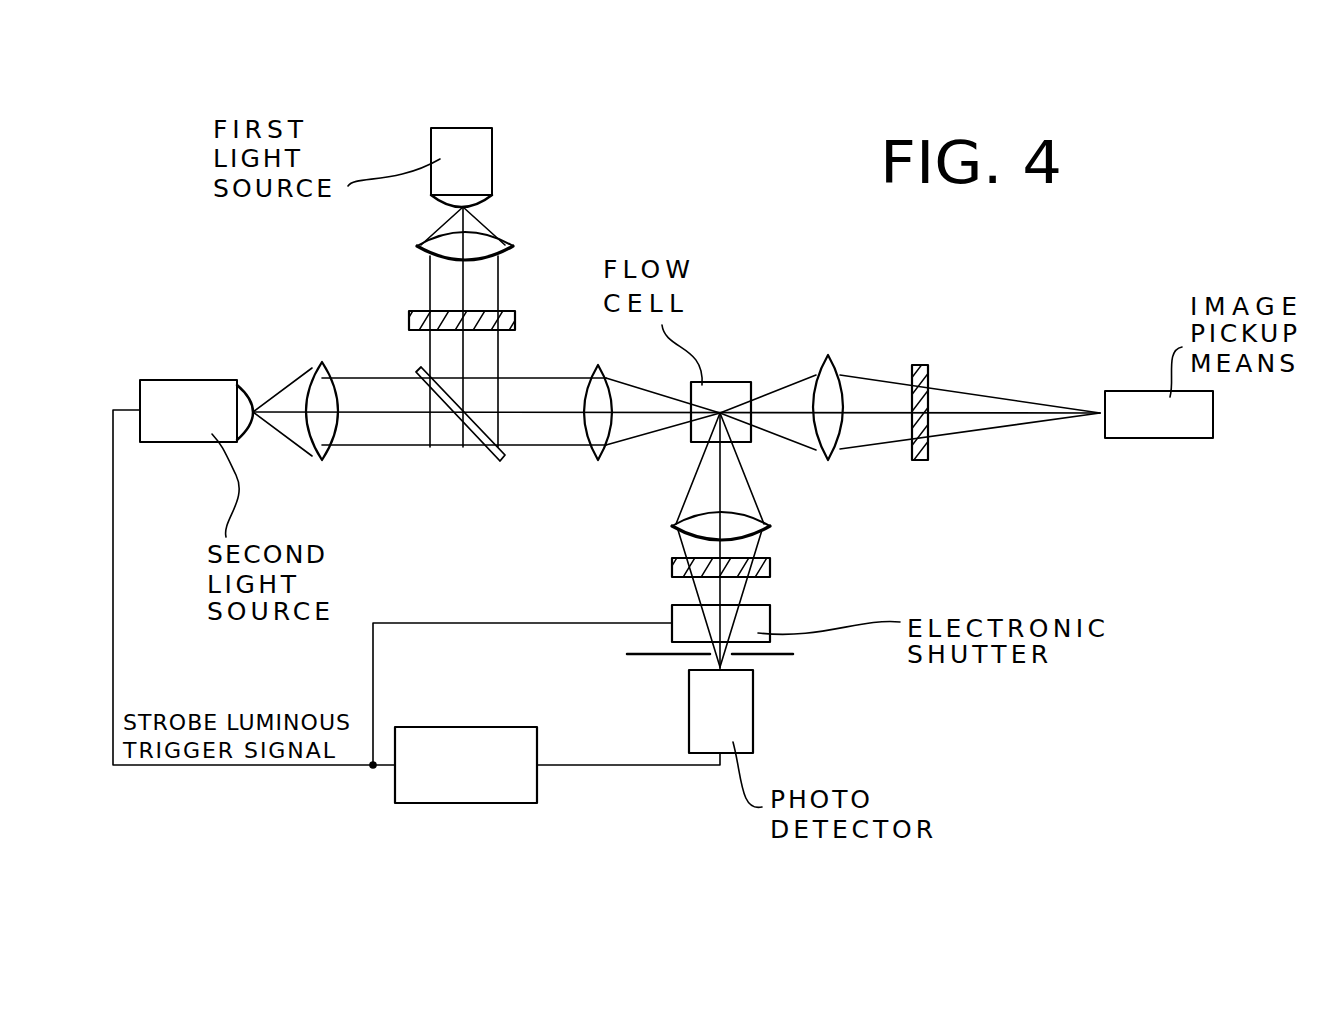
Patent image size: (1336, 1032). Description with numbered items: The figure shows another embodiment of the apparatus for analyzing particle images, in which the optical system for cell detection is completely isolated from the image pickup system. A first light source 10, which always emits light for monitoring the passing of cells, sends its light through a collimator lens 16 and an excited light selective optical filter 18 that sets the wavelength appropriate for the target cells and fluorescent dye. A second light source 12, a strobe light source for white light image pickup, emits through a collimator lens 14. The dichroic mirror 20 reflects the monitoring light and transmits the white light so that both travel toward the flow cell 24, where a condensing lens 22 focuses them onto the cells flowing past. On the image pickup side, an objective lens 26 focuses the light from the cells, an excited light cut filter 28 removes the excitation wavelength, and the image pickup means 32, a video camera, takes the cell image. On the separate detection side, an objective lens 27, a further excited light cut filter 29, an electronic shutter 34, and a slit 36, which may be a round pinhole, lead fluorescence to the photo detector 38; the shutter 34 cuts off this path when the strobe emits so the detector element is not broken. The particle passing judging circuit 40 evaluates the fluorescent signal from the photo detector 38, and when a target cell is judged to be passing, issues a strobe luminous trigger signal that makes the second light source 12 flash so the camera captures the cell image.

The first light source 10 is at (493, 152).
The second light source 12 is at (183, 443).
The collimator lens 14 is at (322, 460).
The collimator lens 16 is at (513, 243).
The excited light selective optical filter 18 is at (514, 312).
The dichroic mirror 20 is at (466, 442).
The condensing lens 22 is at (596, 460).
The flow cell 24 is at (721, 382).
The objective lens 26 is at (830, 365).
The objective lens 27 is at (770, 527).
The excited light cut filter 28 is at (926, 368).
The excited light cut filter 29 is at (770, 575).
The image pickup means 32 is at (1143, 391).
The electronic shutter 34 is at (772, 623).
The slit 36 is at (793, 656).
The photo detector 38 is at (753, 730).
The particle passing judging circuit 40 is at (533, 727).